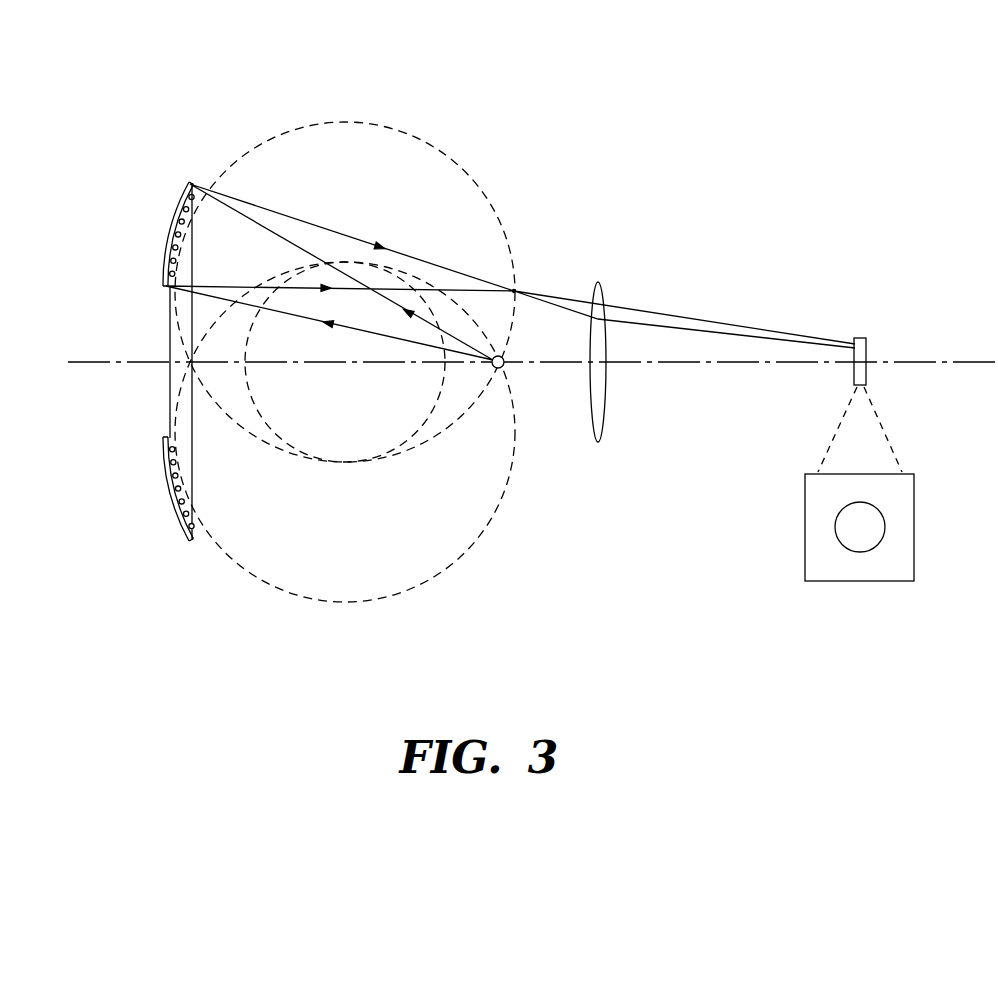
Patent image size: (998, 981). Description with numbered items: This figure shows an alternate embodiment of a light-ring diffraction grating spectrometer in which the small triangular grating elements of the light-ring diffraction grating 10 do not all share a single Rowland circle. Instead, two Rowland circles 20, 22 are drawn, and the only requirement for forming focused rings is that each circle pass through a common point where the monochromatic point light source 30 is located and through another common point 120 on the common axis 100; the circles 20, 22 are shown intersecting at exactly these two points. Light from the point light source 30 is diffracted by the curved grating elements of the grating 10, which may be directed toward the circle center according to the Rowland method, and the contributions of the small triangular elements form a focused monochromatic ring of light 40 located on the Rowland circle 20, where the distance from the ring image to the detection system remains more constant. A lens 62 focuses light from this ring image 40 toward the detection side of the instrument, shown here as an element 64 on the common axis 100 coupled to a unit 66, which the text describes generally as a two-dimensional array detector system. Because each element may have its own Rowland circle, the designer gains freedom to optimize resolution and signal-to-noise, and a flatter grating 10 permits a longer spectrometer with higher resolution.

The light-ring diffraction grating 10 is at (176, 222).
The Rowland circle 20 is at (343, 121).
The Rowland circle 22 is at (323, 604).
The monochromatic point light source 30 is at (503, 367).
The monochromatic ring of light 40 is at (516, 290).
The lens 62 is at (599, 284).
The detector element 64 is at (860, 340).
The display / detector unit 66 is at (828, 574).
The common axis 100 is at (966, 360).
The common point on the common axis 120 is at (186, 364).